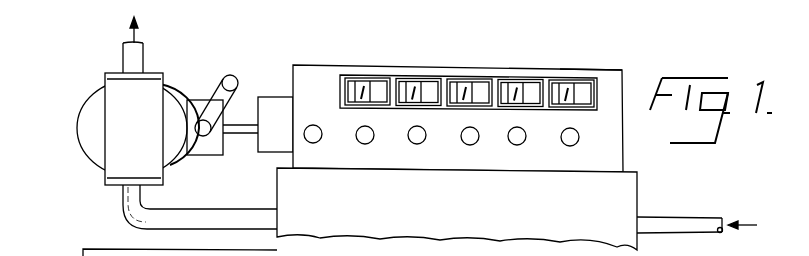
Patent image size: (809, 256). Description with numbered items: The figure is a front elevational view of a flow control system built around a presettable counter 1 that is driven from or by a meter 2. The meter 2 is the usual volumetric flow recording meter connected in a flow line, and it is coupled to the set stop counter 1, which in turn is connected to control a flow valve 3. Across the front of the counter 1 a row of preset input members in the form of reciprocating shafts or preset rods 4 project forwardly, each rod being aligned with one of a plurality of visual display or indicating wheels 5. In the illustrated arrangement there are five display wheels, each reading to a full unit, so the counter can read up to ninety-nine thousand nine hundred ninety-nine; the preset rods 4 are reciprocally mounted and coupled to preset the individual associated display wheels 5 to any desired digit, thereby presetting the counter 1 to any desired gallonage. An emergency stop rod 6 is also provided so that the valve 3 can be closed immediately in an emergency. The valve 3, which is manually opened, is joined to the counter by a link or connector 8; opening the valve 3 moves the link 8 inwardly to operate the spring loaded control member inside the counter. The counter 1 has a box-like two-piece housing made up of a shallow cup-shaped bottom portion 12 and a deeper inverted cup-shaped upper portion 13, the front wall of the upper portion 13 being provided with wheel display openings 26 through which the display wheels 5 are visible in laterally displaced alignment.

The presettable counter 1 is at (387, 133).
The meter 2 is at (625, 201).
The flow valve 3 is at (77, 119).
The preset rods 4 is at (417, 144).
The display wheels 5 is at (473, 66).
The emergency stop rod 6 is at (313, 143).
The link 8 is at (236, 122).
The bottom portion 12 is at (617, 158).
The upper portion 13 is at (613, 78).
The wheel display openings 26 is at (581, 83).